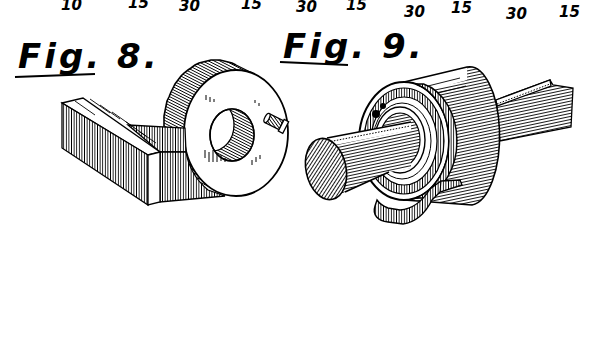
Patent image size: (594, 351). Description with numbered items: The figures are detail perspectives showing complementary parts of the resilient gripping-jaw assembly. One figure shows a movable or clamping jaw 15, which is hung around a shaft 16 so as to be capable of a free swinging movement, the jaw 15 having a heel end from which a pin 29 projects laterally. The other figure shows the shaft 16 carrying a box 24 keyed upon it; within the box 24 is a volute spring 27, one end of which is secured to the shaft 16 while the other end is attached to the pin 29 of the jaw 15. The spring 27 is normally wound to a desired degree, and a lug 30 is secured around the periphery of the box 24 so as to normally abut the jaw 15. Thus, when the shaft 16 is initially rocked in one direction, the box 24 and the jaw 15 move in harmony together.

In FIG. 8, the clamping jaw 15 is at (120, 165).
In FIG. 9, the shaft 16 is at (318, 184).
In FIG. 9, the box 24 is at (478, 100).
In FIG. 9, the volute spring 27 is at (420, 97).
In FIG. 8, the pin 29 is at (289, 122).
In FIG. 9, the lug 30 is at (455, 206).